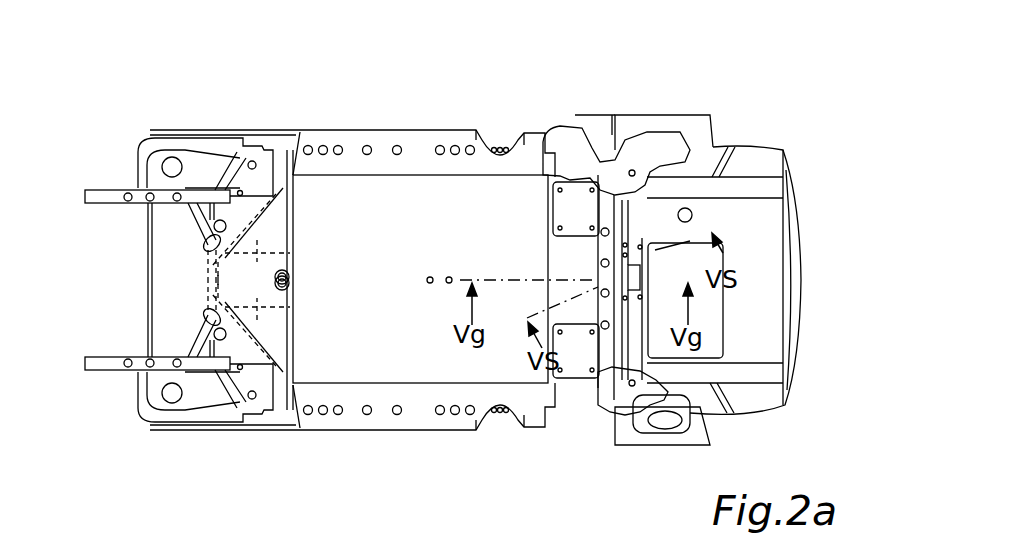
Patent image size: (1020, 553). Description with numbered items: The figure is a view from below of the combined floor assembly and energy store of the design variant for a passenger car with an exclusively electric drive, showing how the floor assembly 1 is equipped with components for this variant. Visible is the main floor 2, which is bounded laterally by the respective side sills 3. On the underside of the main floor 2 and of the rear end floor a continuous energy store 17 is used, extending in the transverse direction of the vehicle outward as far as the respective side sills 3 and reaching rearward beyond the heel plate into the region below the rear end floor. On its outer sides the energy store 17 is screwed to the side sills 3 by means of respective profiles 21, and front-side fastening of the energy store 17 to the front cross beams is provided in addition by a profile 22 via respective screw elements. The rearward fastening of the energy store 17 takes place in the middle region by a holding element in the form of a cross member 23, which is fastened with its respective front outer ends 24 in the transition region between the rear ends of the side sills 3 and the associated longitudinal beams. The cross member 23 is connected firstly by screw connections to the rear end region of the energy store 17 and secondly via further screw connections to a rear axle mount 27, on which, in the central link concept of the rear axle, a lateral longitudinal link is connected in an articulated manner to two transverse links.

The floor assembly 1 is at (803, 83).
The main floor 2 is at (401, 118).
The side sills 3 is at (330, 133).
The energy store 17 is at (481, 258).
The profiles 21 is at (433, 150).
The profile 22 is at (335, 203).
The cross member 23 is at (608, 312).
The front outer ends 24 is at (588, 150).
The rear axle mount 27 is at (710, 231).